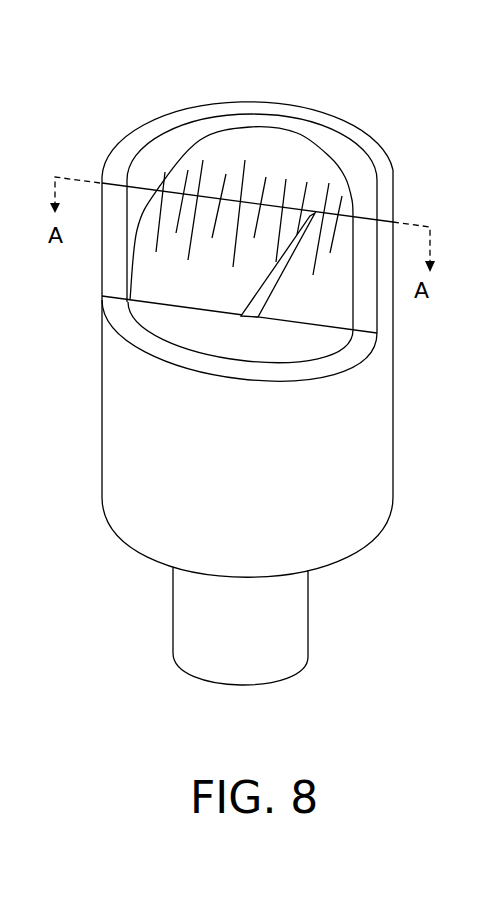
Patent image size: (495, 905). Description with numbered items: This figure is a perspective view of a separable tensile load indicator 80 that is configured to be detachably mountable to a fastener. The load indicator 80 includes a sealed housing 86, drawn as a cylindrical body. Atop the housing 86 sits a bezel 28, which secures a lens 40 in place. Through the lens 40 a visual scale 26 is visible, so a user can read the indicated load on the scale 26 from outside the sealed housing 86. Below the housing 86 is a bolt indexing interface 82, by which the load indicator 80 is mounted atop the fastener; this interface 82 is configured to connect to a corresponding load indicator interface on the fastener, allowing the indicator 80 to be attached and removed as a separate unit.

The separable tensile load indicator 80 is at (428, 126).
The bezel 28 is at (137, 150).
The visual scale 26 is at (277, 145).
The lens 40 is at (333, 216).
The sealed housing 86 is at (382, 428).
The bolt indexing interface 82 is at (295, 631).